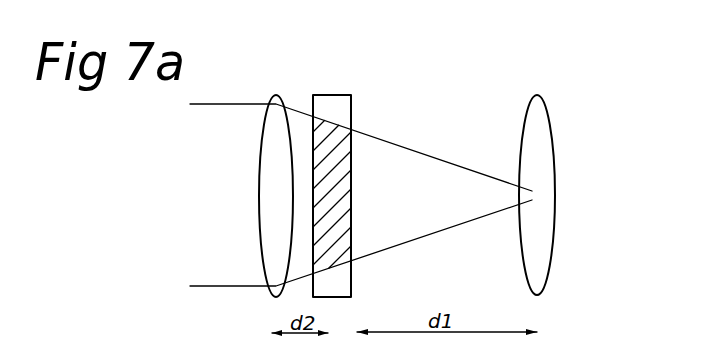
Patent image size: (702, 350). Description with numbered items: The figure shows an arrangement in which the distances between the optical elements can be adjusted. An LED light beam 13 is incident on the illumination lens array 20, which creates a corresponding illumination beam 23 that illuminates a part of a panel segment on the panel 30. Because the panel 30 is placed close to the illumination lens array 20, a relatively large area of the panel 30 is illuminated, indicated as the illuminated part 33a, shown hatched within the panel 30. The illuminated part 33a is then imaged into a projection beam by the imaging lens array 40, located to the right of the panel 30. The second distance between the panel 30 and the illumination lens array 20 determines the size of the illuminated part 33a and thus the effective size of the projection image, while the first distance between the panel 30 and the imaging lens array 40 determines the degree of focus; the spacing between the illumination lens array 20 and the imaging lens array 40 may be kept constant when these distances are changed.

The LED light beam 13 is at (235, 193).
The illumination lens array 20 is at (277, 83).
The illumination beam 23 is at (303, 242).
The panel 30 is at (334, 91).
The illuminated part of a panel segment 33a is at (330, 193).
The imaging lens array 40 is at (538, 89).